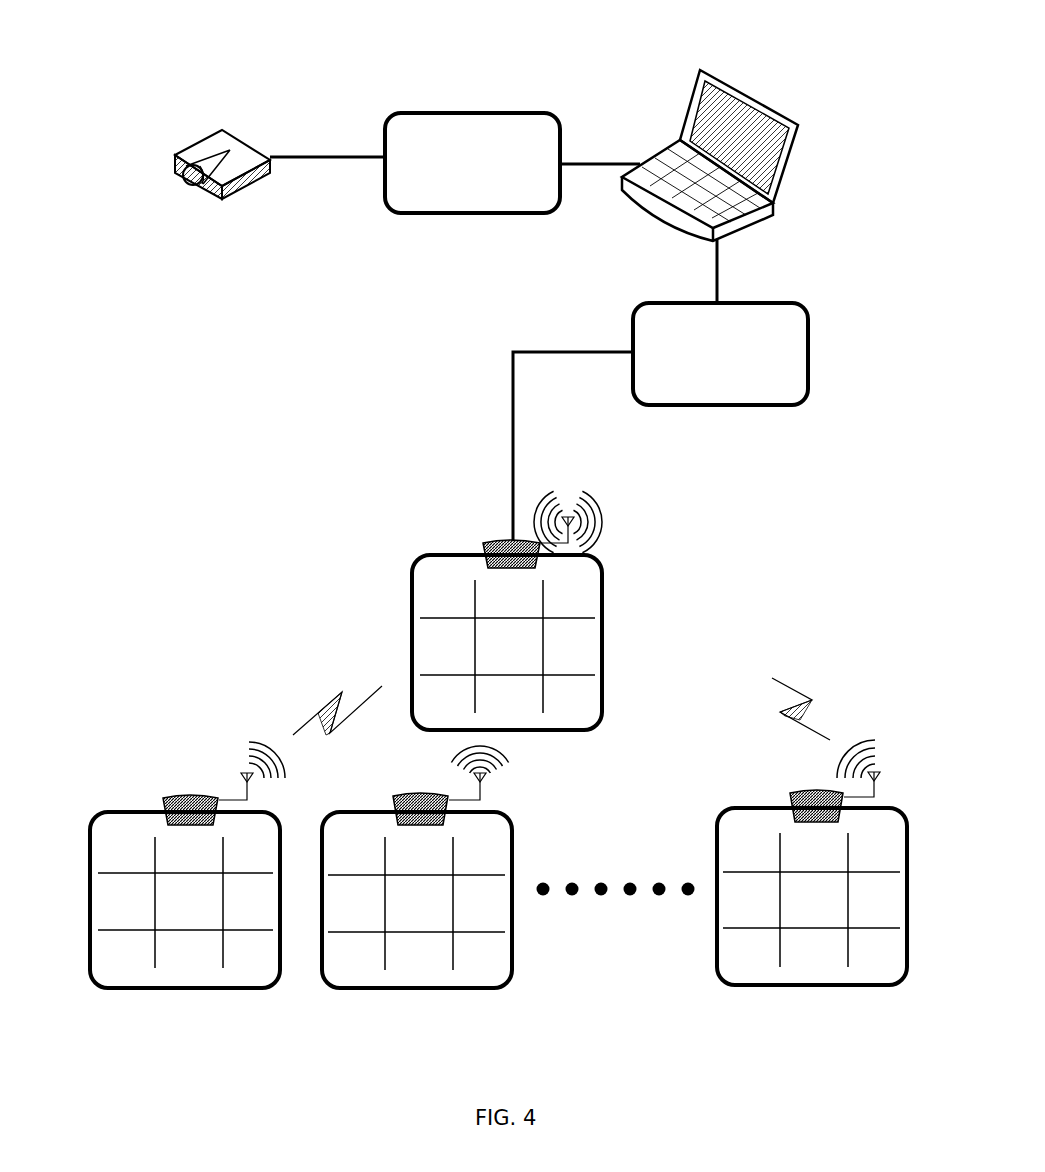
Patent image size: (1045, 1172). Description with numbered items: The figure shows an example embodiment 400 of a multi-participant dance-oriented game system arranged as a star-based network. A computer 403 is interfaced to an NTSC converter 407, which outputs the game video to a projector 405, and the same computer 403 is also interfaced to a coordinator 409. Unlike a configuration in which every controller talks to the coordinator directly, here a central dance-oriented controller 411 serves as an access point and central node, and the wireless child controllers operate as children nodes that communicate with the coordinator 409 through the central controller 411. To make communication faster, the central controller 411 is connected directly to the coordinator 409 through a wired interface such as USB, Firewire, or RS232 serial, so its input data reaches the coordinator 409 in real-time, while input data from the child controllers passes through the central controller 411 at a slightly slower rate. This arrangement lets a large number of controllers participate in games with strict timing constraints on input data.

The example embodiment 400 is at (534, 57).
The computer 403 is at (750, 92).
The projector 405 is at (222, 200).
The NTSC converter 407 is at (455, 189).
The coordinator 409 is at (703, 380).
The central dance-oriented controller 411 is at (412, 643).